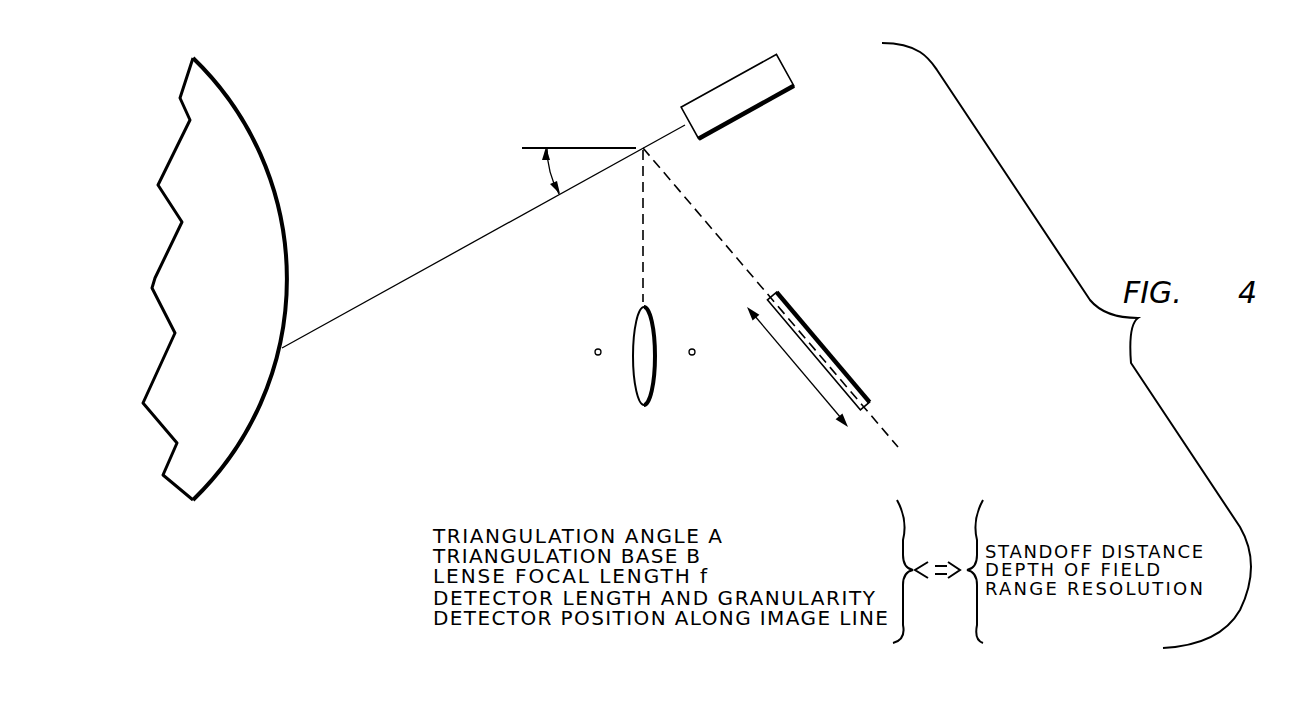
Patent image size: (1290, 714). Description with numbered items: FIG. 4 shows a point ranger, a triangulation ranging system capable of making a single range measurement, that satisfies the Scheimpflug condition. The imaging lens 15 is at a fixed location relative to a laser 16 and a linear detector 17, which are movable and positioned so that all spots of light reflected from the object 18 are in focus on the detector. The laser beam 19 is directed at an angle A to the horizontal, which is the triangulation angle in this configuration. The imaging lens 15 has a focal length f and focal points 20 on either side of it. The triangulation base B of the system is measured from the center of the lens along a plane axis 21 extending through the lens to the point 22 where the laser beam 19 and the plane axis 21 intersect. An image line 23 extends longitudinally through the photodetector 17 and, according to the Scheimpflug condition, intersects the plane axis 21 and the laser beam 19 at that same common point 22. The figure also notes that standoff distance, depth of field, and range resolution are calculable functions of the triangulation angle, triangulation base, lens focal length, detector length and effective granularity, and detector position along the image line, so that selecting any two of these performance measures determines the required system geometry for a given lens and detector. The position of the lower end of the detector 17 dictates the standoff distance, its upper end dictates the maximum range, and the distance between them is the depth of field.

The imaging lens 15 is at (652, 323).
The laser 16 is at (707, 94).
The linear detector 17 is at (823, 350).
The object 18 is at (260, 175).
The laser beam 19 is at (388, 290).
The focal points 20 is at (595, 350).
The plane axis 21 is at (642, 222).
The point 22 is at (641, 144).
The image line 23 is at (718, 238).